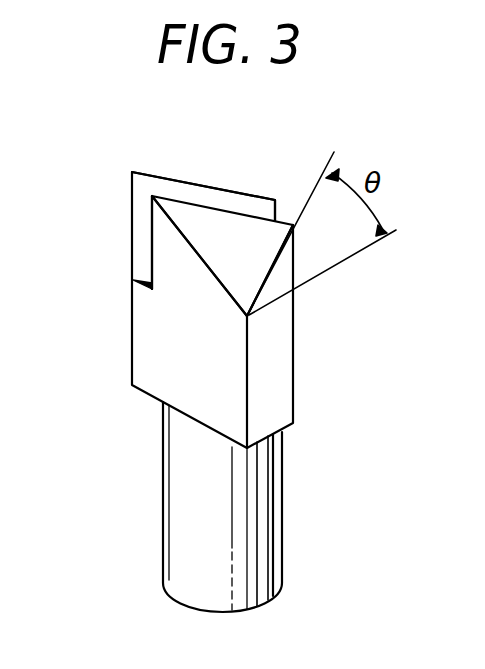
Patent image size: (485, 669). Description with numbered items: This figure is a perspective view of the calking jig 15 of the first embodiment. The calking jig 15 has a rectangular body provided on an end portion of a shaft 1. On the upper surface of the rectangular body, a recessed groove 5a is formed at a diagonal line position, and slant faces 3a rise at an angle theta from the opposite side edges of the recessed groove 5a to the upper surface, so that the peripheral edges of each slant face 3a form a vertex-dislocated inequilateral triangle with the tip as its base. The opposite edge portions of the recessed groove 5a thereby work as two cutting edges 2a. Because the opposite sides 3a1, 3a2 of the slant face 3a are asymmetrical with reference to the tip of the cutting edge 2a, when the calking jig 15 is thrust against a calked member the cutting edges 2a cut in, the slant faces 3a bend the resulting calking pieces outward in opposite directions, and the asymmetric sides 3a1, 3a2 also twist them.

The shaft 1 is at (262, 540).
The calking jig 15 is at (300, 462).
The cutting edge 2a is at (140, 162).
The slant face 3a is at (253, 230).
The side of slant face 3a1 is at (185, 239).
The side of slant face 3a2 is at (276, 264).
The recessed groove 5a is at (214, 210).